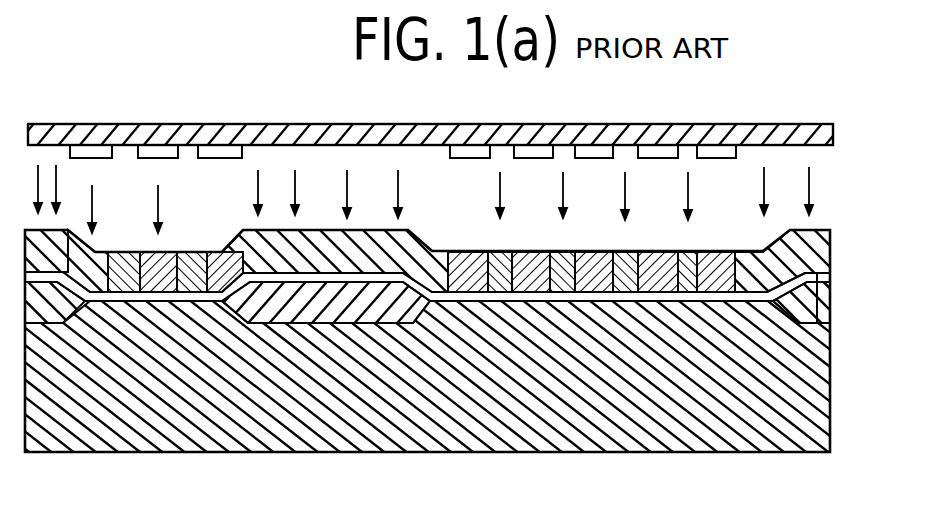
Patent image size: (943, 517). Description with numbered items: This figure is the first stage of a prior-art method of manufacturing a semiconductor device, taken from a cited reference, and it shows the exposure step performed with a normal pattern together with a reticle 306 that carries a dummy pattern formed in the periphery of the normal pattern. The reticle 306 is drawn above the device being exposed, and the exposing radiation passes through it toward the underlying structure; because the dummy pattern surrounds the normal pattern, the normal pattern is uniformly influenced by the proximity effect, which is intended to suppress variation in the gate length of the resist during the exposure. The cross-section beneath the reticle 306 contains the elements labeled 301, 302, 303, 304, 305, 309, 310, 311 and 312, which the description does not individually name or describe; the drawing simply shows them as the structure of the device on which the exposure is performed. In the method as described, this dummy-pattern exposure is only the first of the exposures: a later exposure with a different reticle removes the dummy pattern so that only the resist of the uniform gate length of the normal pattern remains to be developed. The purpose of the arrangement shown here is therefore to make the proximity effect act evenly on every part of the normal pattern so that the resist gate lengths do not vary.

The semiconductor substrate 301 is at (674, 424).
The embedded region 302 is at (340, 312).
The thin insulating film 303 is at (545, 303).
The right insulating layer 304 is at (750, 306).
The interlayer insulating film 305 is at (285, 250).
The reticle 306 is at (348, 123).
The left wiring pattern 309 is at (100, 248).
The wiring pattern 310 is at (218, 242).
The left insulating layer 311 is at (157, 284).
The right wiring pattern 312 is at (590, 255).